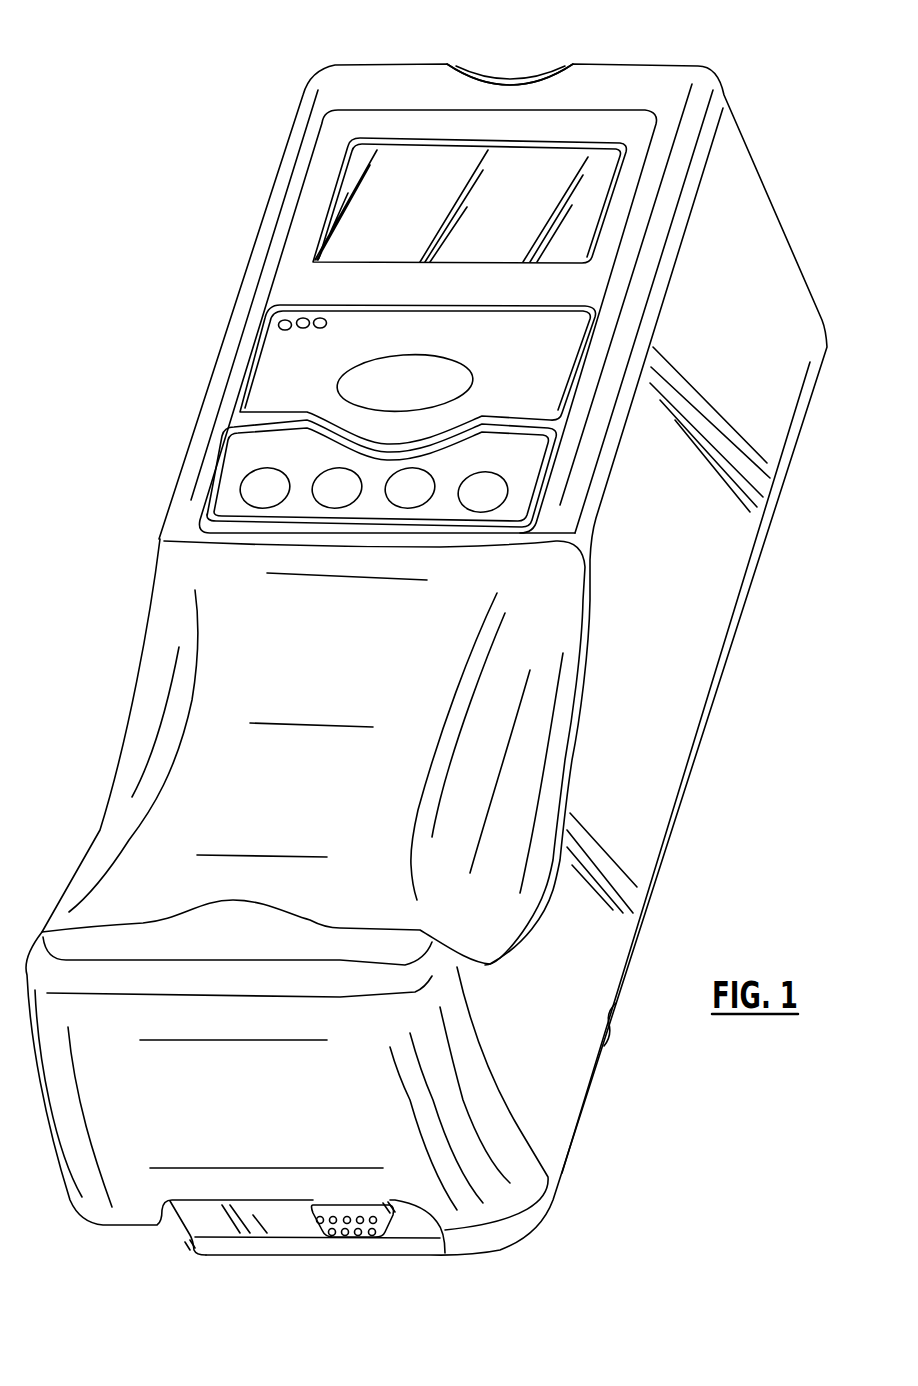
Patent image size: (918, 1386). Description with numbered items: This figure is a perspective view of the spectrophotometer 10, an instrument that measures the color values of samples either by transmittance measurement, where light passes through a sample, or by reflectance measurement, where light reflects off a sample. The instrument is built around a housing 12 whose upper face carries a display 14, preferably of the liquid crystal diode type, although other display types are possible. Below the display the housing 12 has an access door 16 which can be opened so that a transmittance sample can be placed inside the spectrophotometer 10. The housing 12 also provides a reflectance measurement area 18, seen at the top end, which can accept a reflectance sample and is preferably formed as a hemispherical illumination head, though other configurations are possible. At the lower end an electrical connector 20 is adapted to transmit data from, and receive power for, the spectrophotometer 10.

The spectrophotometer 10 is at (450, 656).
The housing 12 is at (788, 288).
The display 14 is at (600, 160).
The access door 16 is at (265, 383).
The reflectance measurement area 18 is at (515, 50).
The electrical connector 20 is at (397, 1213).